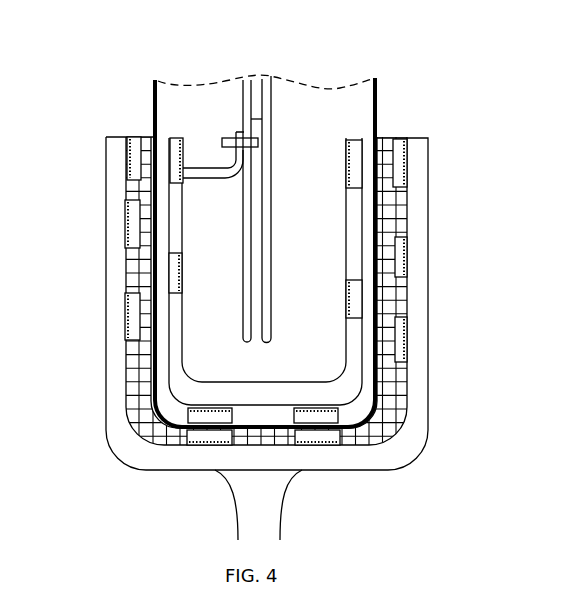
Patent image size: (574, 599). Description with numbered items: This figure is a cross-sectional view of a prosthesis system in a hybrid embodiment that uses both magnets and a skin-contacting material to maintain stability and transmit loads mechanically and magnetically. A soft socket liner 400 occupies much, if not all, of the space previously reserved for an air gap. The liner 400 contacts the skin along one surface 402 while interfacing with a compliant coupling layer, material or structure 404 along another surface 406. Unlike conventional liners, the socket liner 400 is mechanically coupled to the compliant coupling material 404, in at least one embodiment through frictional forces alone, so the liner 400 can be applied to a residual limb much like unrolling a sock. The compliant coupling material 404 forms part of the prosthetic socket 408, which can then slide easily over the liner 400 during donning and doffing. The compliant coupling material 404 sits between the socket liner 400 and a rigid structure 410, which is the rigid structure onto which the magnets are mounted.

The soft socket liner 400 is at (155, 80).
The skin-contacting surface 402 is at (158, 114).
The compliant coupling material 404 is at (137, 277).
The liner interface surface 406 is at (155, 127).
The prosthetic socket 408 is at (383, 463).
The rigid structure 410 is at (182, 468).